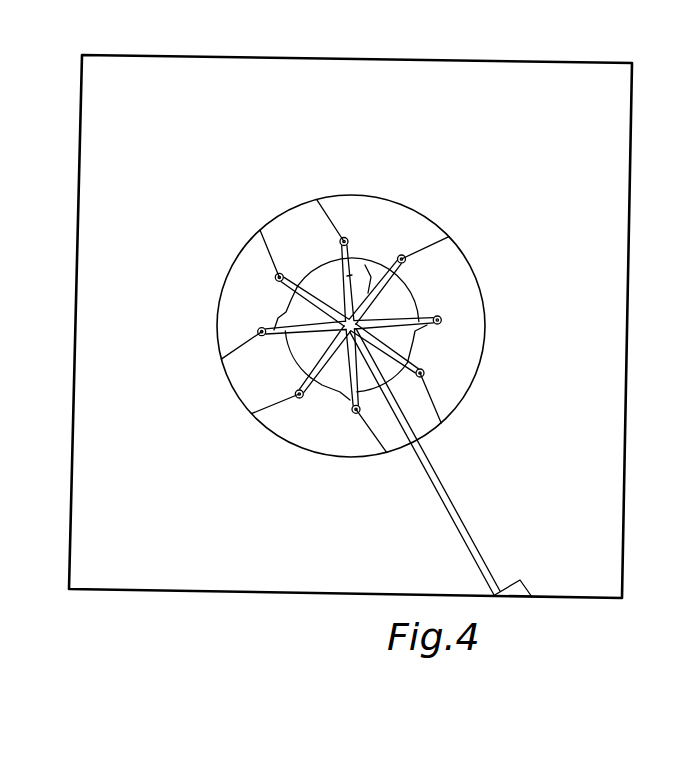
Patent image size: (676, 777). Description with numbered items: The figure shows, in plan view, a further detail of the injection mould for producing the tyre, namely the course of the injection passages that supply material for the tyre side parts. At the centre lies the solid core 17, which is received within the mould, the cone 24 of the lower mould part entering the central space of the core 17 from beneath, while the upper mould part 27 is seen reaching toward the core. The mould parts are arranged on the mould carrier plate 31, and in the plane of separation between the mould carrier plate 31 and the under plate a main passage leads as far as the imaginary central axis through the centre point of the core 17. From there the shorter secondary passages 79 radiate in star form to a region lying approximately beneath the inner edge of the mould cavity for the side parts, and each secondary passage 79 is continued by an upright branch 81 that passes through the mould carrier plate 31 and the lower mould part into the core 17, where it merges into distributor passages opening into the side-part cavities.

The core 17 is at (397, 305).
The cone 24 is at (458, 383).
The upper mould part 27 is at (465, 527).
The mould carrier plate 31 is at (437, 225).
The secondary passages 79 is at (368, 293).
The upright branch 81 is at (441, 320).